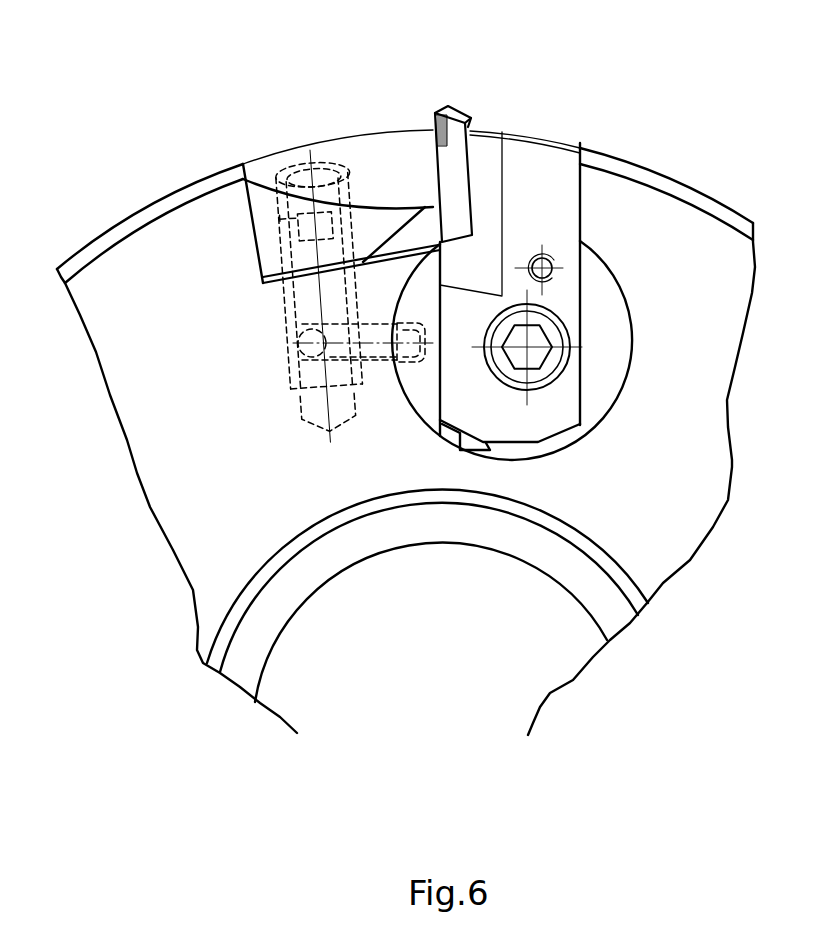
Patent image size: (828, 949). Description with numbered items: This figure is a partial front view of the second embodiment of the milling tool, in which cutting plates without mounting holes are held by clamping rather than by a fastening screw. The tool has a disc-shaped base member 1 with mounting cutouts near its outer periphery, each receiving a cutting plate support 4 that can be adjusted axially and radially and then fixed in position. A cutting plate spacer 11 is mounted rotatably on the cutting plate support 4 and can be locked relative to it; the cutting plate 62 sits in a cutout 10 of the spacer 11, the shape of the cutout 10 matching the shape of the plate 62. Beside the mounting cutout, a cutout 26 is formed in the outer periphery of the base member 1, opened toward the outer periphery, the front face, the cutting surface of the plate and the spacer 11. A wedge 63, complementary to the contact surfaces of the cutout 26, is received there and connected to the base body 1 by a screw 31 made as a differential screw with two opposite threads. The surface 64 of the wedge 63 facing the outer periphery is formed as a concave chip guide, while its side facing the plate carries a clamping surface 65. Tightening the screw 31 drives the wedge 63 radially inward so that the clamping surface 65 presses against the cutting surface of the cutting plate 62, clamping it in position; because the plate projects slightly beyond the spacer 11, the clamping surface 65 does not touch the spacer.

The base member 1 is at (147, 258).
The cutting plate support 4 is at (548, 210).
The cutout 10 is at (473, 200).
The cutting plate spacer 11 is at (487, 170).
The cutout 26 is at (277, 288).
The screw 31 is at (292, 165).
The cutting plate 62 is at (452, 133).
The wedge 63 is at (267, 210).
The surface 64 is at (397, 157).
The clamping surface 65 is at (438, 232).